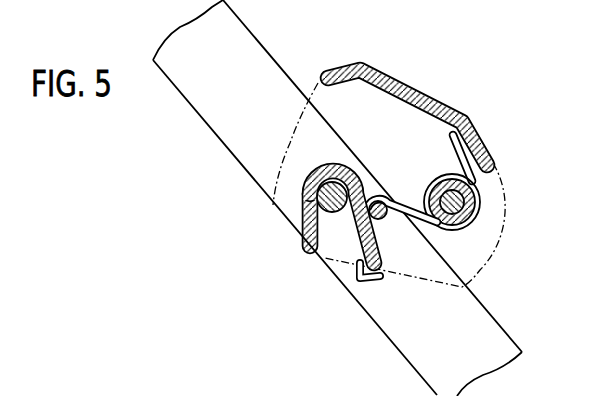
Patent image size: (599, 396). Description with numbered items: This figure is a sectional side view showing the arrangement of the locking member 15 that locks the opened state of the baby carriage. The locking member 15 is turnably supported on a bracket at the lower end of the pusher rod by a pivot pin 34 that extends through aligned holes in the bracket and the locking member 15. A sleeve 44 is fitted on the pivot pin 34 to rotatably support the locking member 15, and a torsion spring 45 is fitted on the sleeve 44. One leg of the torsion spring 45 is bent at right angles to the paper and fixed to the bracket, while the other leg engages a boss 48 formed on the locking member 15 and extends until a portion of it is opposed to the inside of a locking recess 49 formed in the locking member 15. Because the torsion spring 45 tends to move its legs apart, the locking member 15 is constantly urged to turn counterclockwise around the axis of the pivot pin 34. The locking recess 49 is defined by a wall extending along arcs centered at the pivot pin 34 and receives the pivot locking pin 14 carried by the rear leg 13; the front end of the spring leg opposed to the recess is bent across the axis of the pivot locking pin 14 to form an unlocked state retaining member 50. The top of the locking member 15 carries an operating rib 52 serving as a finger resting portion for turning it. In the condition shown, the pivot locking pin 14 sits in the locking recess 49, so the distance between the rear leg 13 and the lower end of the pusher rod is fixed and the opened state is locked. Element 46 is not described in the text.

The rear leg 13 is at (253, 47).
The pivot locking pin 14 is at (285, 241).
The locking member 15 is at (452, 178).
The pivot pin 34 is at (503, 224).
The sleeve 44 is at (467, 214).
The torsion spring 45 is at (457, 230).
The arm 46 is at (470, 130).
The boss 48 is at (383, 216).
The locking recess 49 is at (323, 250).
The unlocked state retaining member 50 is at (366, 279).
The operating rib 52 is at (407, 83).